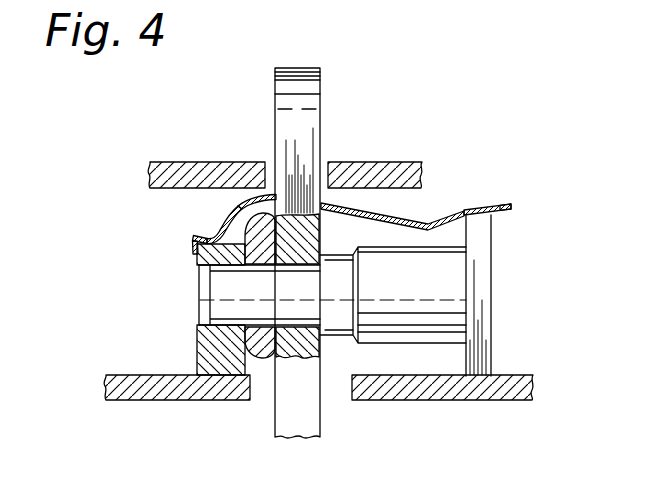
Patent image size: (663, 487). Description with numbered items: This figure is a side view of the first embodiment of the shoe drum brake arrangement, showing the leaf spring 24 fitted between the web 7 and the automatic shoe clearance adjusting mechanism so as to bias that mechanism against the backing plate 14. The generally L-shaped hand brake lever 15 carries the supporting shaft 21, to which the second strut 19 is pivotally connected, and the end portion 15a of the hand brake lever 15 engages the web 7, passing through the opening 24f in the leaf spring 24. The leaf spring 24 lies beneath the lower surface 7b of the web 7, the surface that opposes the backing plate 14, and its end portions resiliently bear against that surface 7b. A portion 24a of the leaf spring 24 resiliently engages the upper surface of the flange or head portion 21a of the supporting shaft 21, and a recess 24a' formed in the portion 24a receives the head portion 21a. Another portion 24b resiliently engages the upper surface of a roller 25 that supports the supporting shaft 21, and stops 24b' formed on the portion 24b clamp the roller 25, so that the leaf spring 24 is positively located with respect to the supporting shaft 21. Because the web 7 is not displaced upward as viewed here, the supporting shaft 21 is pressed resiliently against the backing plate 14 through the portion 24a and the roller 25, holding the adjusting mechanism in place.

The web 7 is at (385, 167).
The lower surface of the web 7b is at (428, 193).
The backing plate 14 is at (514, 376).
The hand brake lever 15 is at (288, 178).
The end portion of the hand brake lever 15a is at (321, 80).
The second strut 19 is at (233, 208).
The supporting shaft 21 is at (336, 336).
The head portion of the supporting shaft 21a is at (487, 250).
The leaf spring 24 is at (428, 220).
The portion of the leaf spring engaging the head portion 24a is at (515, 197).
The recess 24a' is at (528, 222).
The portion of the leaf spring engaging the roller 24b is at (166, 227).
The stops 24b' is at (161, 255).
The opening 24f is at (276, 198).
The roller 25 is at (197, 347).